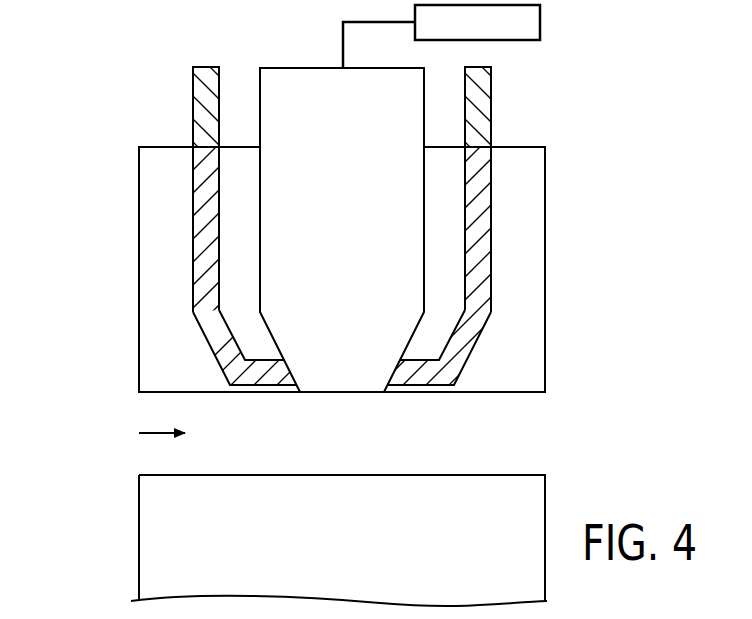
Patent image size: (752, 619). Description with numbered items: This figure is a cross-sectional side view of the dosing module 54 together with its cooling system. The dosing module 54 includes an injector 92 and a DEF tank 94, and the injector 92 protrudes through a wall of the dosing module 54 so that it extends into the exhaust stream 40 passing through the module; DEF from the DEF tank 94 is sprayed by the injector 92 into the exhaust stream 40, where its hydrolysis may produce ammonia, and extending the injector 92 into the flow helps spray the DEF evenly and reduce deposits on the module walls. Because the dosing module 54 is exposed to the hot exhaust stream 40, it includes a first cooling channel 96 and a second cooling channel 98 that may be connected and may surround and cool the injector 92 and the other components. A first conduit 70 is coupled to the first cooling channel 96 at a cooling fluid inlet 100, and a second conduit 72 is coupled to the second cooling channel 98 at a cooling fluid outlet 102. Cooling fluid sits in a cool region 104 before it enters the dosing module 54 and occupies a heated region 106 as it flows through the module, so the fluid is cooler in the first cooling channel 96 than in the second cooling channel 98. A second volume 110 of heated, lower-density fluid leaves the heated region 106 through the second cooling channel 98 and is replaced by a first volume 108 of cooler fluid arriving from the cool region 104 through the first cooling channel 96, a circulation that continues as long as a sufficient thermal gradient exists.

The exhaust stream 40 is at (156, 421).
The dosing module 54 is at (53, 187).
The first conduit 70 is at (193, 97).
The second conduit 72 is at (491, 97).
The injector 92 is at (300, 68).
The DEF tank 94 is at (540, 22).
The first cooling channel 96 is at (193, 228).
The second cooling channel 98 is at (491, 228).
The cooling fluid inlet 100 is at (193, 146).
The cooling fluid outlet 102 is at (491, 146).
The cool region 104 is at (137, 43).
The heated region 106 is at (573, 210).
The first volume 108 is at (209, 79).
The second volume 110 is at (210, 278).